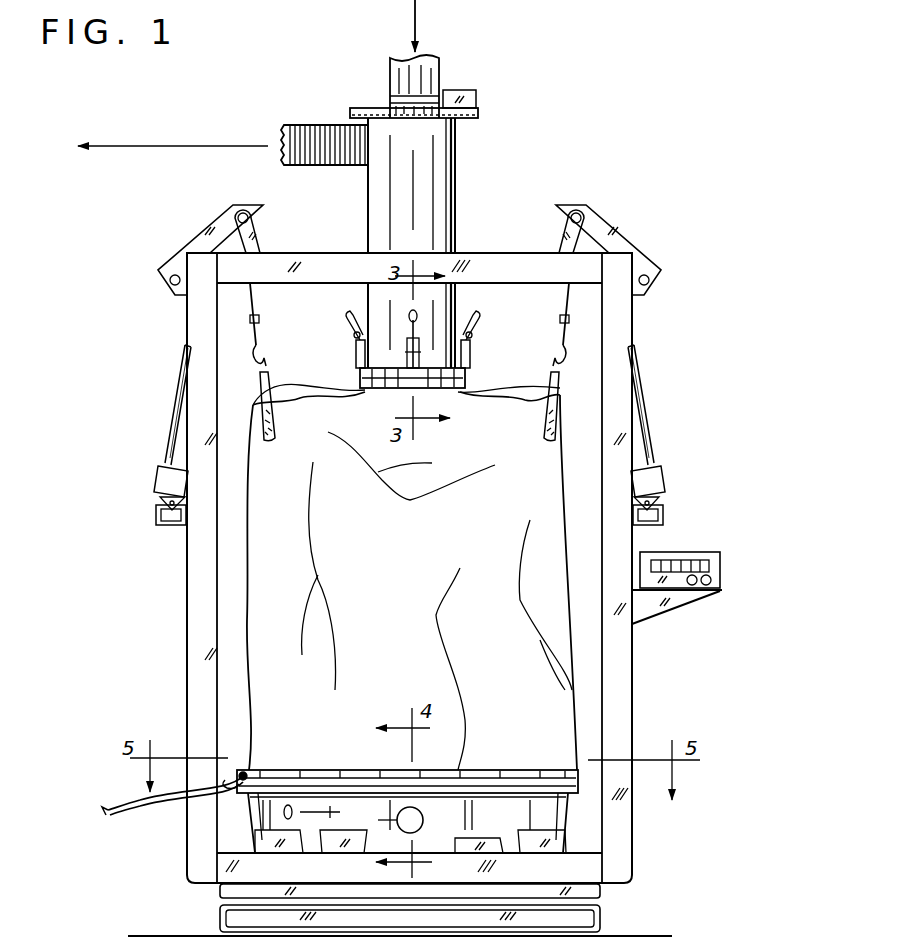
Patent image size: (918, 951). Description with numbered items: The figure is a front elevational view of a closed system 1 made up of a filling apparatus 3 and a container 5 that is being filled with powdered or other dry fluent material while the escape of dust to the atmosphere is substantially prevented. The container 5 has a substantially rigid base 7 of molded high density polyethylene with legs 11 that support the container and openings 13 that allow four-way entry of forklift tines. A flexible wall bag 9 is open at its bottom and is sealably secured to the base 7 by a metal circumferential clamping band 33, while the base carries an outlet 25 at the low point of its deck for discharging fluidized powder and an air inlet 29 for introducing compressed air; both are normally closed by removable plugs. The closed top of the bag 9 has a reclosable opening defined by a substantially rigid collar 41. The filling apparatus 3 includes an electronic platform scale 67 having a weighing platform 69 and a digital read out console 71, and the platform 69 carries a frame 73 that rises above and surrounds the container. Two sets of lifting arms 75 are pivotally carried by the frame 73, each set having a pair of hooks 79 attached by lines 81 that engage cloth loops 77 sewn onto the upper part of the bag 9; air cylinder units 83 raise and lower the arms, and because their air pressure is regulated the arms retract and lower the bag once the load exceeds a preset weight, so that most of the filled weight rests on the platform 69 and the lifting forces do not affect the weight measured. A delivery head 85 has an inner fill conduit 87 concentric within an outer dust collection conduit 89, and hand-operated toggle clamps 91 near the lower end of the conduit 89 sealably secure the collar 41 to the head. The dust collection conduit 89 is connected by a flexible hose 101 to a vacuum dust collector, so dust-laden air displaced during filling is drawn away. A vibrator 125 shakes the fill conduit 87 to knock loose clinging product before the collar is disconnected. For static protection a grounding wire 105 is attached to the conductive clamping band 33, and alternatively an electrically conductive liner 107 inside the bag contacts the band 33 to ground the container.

The closed system 1 is at (772, 440).
The filling apparatus 3 is at (493, 203).
The container 5 is at (245, 578).
The base 7 is at (575, 842).
The flexible wall bag 9 is at (568, 690).
The legs 11 is at (265, 840).
The openings 13 is at (290, 855).
The outlet 25 is at (420, 812).
The air inlet 29 is at (289, 804).
The clamping band 33 is at (578, 775).
The collar 41 is at (470, 398).
The electronic platform scale 67 is at (724, 590).
The weighing platform 69 is at (603, 922).
The digital read out console 71 is at (722, 568).
The frame 73 is at (200, 620).
The lifting arms 75 is at (205, 240).
The cloth loops 77 is at (255, 388).
The hooks 79 is at (266, 368).
The lines 81 is at (245, 290).
The air cylinder units 83 is at (168, 447).
The delivery head 85 is at (367, 218).
The fill conduit 87 is at (440, 70).
The dust collection conduit 89 is at (460, 165).
The toggle clamps 91 is at (352, 352).
The flexible hose 101 is at (302, 125).
The grounding wire 105 is at (243, 770).
The electrically conductive liner 107 is at (400, 933).
The vibrator 125 is at (478, 100).